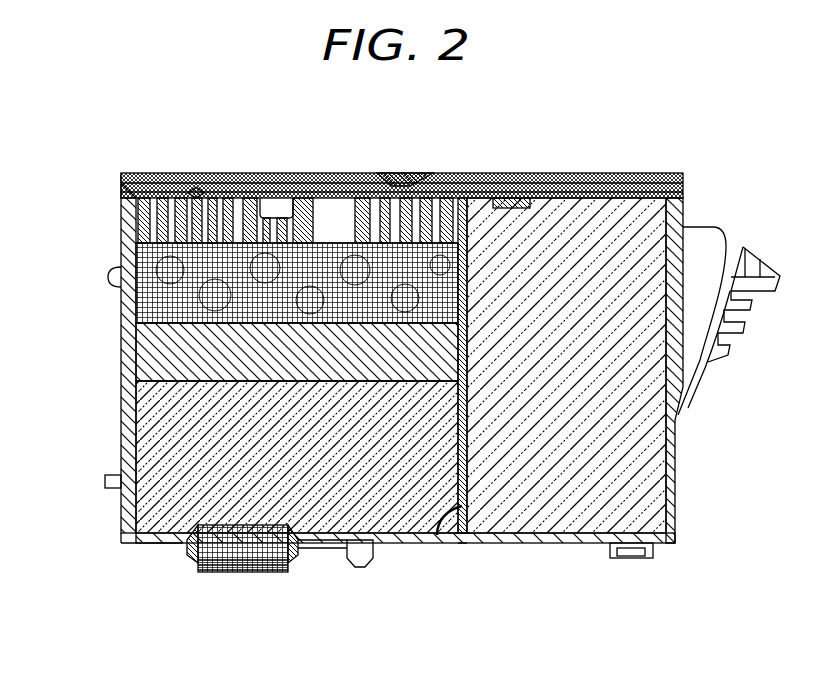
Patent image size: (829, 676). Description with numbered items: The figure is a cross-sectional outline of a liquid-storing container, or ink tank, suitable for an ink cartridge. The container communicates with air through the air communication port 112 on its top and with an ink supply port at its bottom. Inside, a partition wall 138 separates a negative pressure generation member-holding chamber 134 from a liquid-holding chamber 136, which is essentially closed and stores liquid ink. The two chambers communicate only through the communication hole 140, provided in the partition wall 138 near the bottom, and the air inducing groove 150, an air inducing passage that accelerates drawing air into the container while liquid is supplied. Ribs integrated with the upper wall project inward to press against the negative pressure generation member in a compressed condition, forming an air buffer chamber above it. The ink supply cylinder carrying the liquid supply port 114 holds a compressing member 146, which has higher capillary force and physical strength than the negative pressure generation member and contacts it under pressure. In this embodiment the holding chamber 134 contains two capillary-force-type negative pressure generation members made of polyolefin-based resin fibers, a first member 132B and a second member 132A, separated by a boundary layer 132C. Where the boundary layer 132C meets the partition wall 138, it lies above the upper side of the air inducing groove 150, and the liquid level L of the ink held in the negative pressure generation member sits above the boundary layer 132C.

The air communication port 112 is at (393, 174).
The partition wall 138 is at (460, 198).
The second member 132A is at (148, 259).
The liquid level L is at (150, 318).
The negative pressure generation member-holding chamber 134 is at (150, 346).
The boundary layer 132C is at (150, 382).
The first member 132B is at (155, 430).
The liquid-holding chamber 136 is at (650, 473).
The liquid supply port 114 is at (182, 552).
The compressing member 146 is at (262, 548).
The air inducing groove 150 is at (437, 536).
The communication hole 140 is at (458, 545).